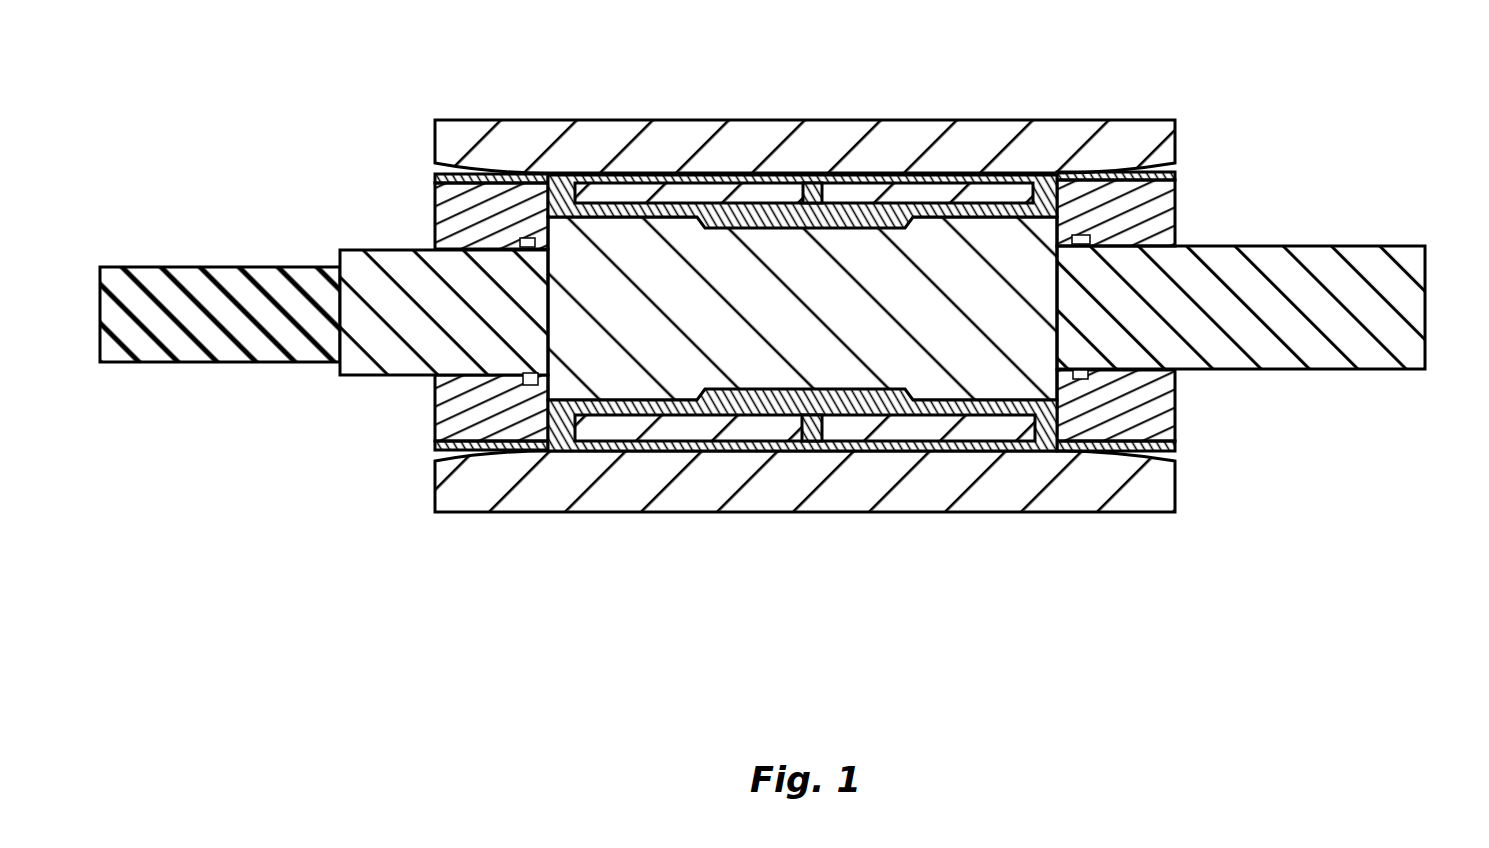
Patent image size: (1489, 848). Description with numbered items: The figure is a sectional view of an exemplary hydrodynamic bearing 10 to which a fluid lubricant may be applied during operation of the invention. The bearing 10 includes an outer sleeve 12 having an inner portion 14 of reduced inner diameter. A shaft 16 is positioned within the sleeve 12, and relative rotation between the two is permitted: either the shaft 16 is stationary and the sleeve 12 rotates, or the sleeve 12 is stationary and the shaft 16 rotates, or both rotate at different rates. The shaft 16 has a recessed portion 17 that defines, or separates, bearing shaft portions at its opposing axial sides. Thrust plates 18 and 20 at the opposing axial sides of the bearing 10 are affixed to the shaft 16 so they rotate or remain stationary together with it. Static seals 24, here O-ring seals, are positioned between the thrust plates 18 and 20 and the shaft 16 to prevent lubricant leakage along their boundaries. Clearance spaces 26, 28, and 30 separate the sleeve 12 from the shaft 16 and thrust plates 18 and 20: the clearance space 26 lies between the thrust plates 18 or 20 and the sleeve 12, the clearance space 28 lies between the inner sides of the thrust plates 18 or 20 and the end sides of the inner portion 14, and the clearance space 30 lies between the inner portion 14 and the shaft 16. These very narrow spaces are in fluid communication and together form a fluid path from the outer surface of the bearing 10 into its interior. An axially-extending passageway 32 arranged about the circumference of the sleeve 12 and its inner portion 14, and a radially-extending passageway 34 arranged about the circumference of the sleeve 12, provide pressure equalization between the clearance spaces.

The hydrodynamic bearing 10 is at (360, 104).
The outer sleeve 12 is at (920, 118).
The inner portion 14 is at (925, 433).
The shaft 16 is at (735, 287).
The recessed portion 17 is at (745, 398).
The thrust plate 18 is at (433, 210).
The thrust plate 20 is at (1175, 197).
The static seals 24 is at (1075, 238).
The clearance space 26 is at (512, 455).
The clearance space 28 is at (433, 222).
The clearance space 30 is at (637, 203).
The axially-extending passageway 32 is at (660, 447).
The radially-extending passageway 34 is at (850, 445).